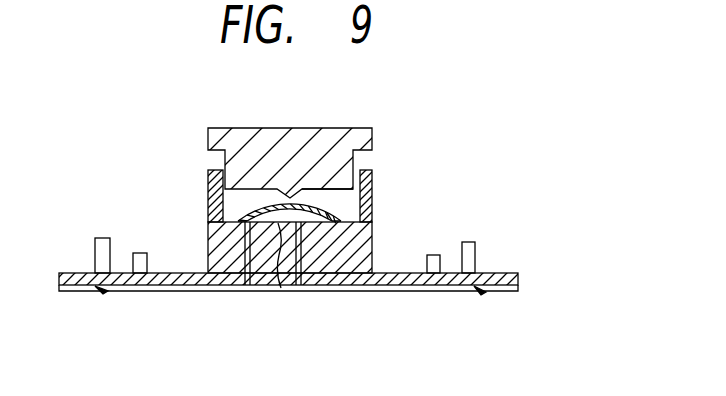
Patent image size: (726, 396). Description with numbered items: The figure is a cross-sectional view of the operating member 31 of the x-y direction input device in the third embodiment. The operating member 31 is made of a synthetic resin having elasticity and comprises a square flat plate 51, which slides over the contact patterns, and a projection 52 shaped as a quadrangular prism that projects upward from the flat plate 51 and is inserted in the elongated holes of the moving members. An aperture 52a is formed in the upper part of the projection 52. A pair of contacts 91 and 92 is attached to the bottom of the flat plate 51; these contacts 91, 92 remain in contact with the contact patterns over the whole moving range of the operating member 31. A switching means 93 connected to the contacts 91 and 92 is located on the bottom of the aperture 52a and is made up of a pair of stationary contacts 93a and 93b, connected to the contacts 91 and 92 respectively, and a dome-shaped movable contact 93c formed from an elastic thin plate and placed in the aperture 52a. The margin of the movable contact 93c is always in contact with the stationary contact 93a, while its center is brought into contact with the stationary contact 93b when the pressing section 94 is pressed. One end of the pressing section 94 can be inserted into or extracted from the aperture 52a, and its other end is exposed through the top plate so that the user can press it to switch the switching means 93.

The operating member 31 is at (252, 127).
The pressing section 94 is at (354, 130).
The aperture 52a is at (334, 186).
The switching means 93 is at (238, 203).
The stationary contact 93a is at (238, 226).
The stationary contact 93b is at (281, 288).
The movable contact 93c is at (346, 205).
The projection 52 is at (374, 215).
The flat plate 51 is at (487, 271).
The contact 91 is at (101, 292).
The contact 92 is at (484, 294).